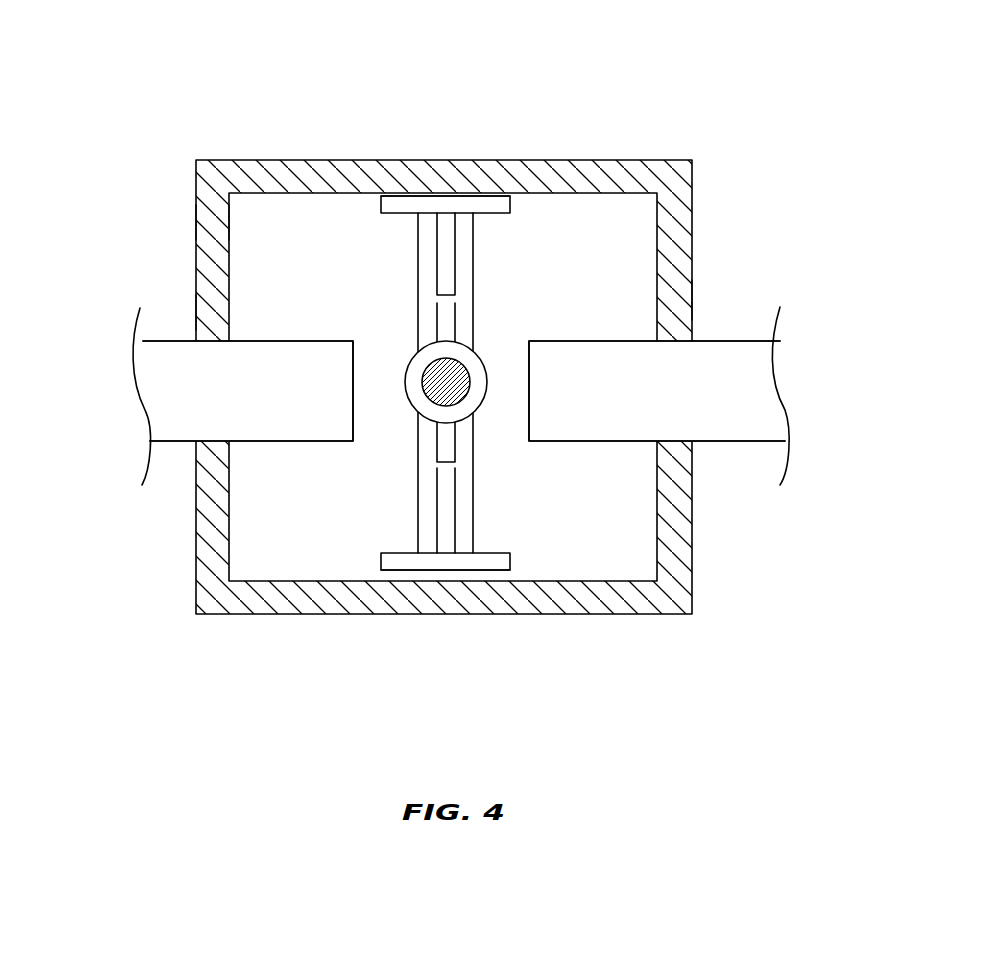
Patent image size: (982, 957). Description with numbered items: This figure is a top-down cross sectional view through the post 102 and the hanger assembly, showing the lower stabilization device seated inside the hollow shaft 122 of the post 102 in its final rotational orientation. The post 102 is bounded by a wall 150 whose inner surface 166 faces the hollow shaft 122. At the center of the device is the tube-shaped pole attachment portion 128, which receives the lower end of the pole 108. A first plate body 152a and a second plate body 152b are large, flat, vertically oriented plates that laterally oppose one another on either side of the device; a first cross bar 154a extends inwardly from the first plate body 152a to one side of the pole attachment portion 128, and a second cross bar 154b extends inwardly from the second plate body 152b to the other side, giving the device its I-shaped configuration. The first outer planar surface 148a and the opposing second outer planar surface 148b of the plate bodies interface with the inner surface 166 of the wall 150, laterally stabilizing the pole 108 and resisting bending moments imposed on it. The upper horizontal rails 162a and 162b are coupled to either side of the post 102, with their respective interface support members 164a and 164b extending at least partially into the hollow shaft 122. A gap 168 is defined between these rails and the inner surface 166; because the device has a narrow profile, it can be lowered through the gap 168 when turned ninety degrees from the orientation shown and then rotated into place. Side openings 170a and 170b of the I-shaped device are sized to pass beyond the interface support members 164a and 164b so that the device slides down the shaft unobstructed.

The post 102 is at (580, 173).
The pole 108 is at (463, 378).
The hollow shaft 122 is at (622, 223).
The pole attachment portion 128 is at (428, 360).
The first outer planar surface 148a is at (462, 199).
The second outer planar surface 148b is at (402, 576).
The wall 150 is at (207, 222).
The first plate body 152a is at (428, 205).
The second plate body 152b is at (447, 560).
The first cross bar 154a is at (465, 277).
The second cross bar 154b is at (463, 500).
The horizontal rail 162a is at (278, 400).
The interface support member 164a is at (226, 448).
The horizontal rail 162b is at (620, 380).
The interface support member 164b is at (657, 437).
The inner surface 166 is at (288, 198).
The gap 168 is at (252, 278).
The side opening 170a is at (362, 275).
The side opening 170b is at (486, 322).